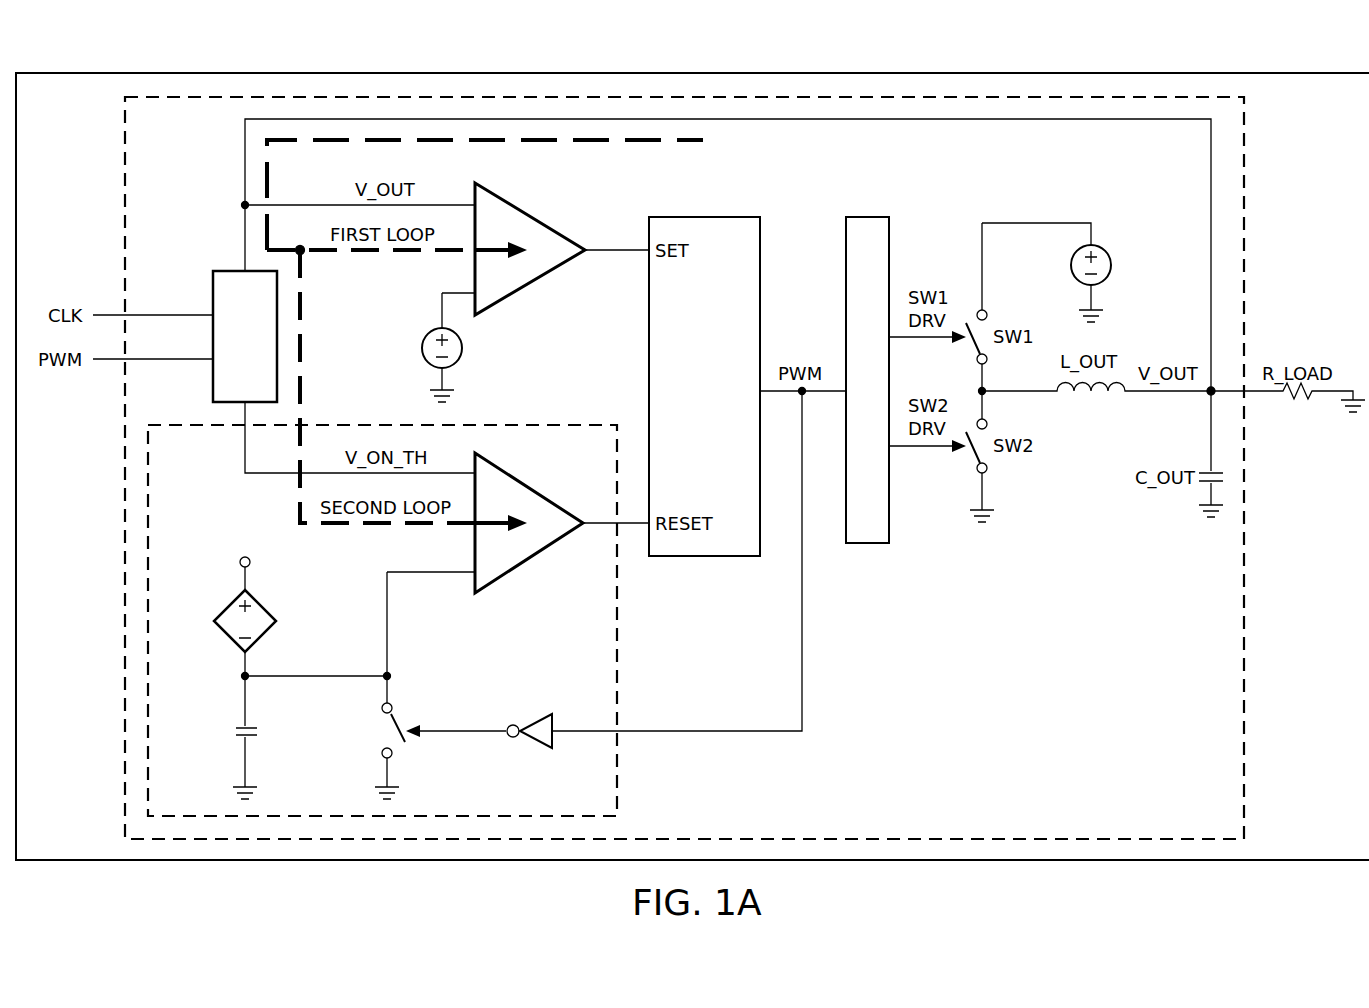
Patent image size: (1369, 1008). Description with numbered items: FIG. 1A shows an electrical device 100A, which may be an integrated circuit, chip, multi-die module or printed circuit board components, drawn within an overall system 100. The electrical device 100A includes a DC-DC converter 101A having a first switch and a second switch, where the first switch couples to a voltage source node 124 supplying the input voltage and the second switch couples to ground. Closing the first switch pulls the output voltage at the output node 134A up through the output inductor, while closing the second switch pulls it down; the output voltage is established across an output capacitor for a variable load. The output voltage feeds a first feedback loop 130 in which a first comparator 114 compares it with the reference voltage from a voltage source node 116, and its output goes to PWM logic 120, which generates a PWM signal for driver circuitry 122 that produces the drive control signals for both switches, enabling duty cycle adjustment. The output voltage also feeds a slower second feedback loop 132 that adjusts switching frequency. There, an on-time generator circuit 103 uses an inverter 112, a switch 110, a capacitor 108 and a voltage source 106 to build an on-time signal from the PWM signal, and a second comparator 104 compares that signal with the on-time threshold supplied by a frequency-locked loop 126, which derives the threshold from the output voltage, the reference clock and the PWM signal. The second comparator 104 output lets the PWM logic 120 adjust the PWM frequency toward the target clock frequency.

The switching regulator system 100 is at (612, 66).
The electrical device 100A is at (1343, 130).
The DC-DC converter 101A is at (1186, 791).
The on-time generator circuit 103 is at (566, 416).
The second comparator 104 is at (528, 556).
The voltage source 106 is at (235, 601).
The capacitor 108 is at (232, 735).
The switch 110 is at (402, 716).
The inverter 112 is at (532, 748).
The first comparator 114 is at (532, 216).
The voltage source node 116 is at (428, 366).
The PWM logic 120 is at (686, 425).
The driver circuitry 122 is at (868, 217).
The voltage source node 124 is at (1071, 266).
The frequency-locked loop (FLL) 126 is at (213, 292).
The first feedback loop 130 is at (392, 256).
The second feedback loop 132 is at (386, 528).
The output node 134A is at (1205, 398).